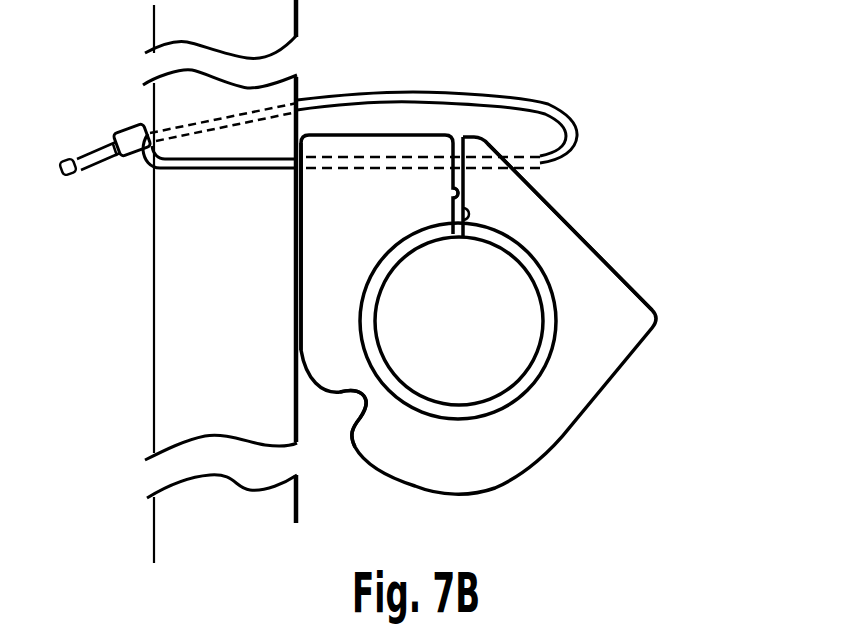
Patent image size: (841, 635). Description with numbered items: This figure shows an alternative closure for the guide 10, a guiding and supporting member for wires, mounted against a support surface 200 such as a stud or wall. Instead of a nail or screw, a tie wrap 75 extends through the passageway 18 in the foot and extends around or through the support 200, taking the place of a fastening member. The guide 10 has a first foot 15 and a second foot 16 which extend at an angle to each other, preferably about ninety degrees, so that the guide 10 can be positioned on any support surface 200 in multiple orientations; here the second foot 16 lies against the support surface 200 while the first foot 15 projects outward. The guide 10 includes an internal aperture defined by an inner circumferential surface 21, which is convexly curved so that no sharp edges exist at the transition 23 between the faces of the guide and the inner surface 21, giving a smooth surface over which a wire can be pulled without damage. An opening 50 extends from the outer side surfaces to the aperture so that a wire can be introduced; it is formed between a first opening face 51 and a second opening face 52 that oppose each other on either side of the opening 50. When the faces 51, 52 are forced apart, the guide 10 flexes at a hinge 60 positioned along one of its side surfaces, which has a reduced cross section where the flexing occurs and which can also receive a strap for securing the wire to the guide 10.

The guide 10 is at (614, 410).
The first foot 15 is at (618, 272).
The second foot 16 is at (296, 232).
The passageway 18 is at (420, 152).
The inner circumferential surface 21 is at (542, 352).
The transition 23 is at (362, 290).
The opening 50 is at (466, 124).
The first opening face 51 is at (467, 215).
The second opening face 52 is at (455, 197).
The hinge 60 is at (335, 425).
The tie wrap 75 is at (353, 96).
The support surface 200 is at (163, 373).